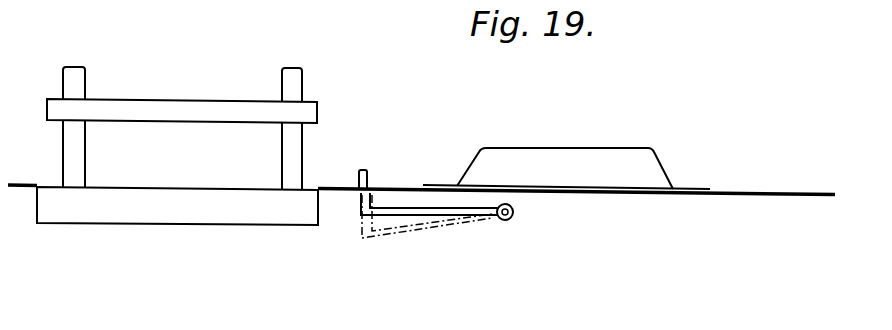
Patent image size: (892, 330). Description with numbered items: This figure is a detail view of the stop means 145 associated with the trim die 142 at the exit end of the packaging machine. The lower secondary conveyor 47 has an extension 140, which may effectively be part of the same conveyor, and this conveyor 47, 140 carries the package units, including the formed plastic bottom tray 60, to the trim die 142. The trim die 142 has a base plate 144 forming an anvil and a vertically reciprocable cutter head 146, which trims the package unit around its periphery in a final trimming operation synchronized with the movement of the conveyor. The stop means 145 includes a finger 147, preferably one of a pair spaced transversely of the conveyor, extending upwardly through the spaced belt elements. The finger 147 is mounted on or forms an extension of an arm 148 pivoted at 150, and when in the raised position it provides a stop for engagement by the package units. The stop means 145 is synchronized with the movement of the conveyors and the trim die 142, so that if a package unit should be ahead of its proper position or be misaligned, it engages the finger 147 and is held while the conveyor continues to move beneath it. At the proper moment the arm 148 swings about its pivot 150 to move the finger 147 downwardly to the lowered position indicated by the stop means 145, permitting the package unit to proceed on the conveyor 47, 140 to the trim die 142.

The secondary conveyor 47 is at (421, 237).
The extension 140 is at (642, 197).
The trim die 142 is at (311, 79).
The cutter head 146 is at (169, 104).
The base plate 144 is at (181, 214).
The finger 147 is at (368, 170).
The arm 148 is at (458, 216).
The pivot 150 is at (511, 219).
The stop means 145 is at (409, 241).
The bottom tray 60 is at (621, 139).